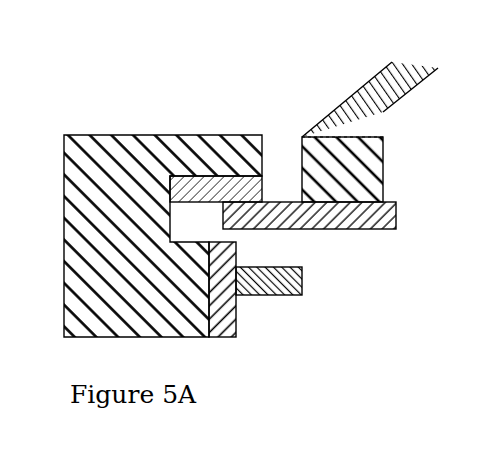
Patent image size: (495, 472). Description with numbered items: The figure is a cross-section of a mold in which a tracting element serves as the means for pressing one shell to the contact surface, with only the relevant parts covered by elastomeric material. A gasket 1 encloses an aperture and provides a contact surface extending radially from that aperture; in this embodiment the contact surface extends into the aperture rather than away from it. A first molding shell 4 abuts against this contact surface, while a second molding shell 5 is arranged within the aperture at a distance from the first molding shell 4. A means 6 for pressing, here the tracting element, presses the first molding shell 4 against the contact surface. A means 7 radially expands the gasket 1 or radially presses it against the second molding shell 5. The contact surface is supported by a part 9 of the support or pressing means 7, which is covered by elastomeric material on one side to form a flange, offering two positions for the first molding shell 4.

The gasket 1 is at (225, 318).
The first molding shell 4 is at (342, 217).
The second molding shell 5 is at (282, 297).
The means for pressing the first molding shell 6 is at (357, 148).
The means for radially expanding or pressing the gasket 7 is at (90, 243).
The part of the support or pressing means 9 is at (202, 173).